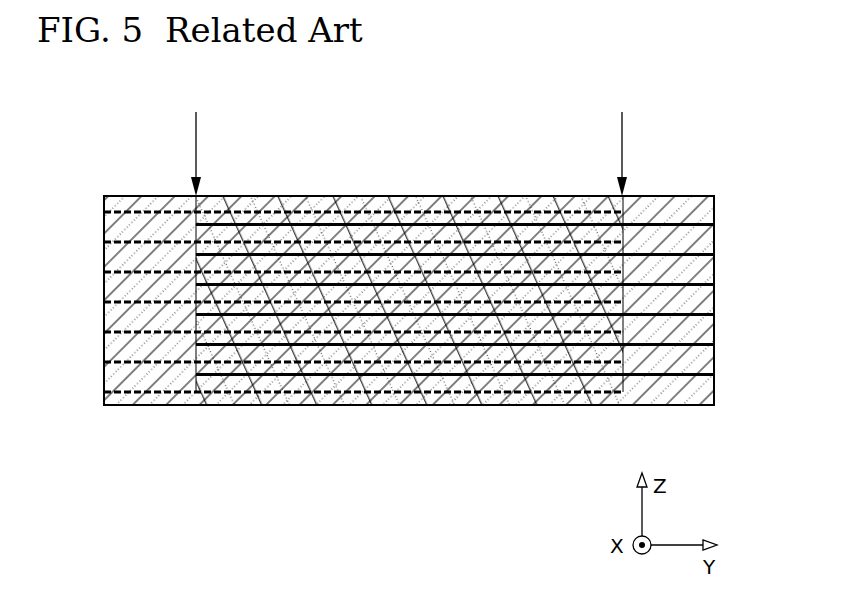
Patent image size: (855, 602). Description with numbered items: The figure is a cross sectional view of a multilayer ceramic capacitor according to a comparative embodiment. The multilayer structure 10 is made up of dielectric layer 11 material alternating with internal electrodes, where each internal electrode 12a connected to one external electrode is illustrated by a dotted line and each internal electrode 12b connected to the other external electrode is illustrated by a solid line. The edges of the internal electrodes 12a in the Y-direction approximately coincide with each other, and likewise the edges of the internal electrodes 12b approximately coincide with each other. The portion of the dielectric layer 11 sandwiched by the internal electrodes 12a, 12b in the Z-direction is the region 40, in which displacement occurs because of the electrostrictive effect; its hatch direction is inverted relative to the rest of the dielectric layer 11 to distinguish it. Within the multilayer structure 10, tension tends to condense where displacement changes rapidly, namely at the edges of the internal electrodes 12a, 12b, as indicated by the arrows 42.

The multilayer structure 10 is at (441, 273).
The dielectric layer 11 is at (703, 206).
The internal electrode 12a is at (297, 201).
The internal electrode 12b is at (458, 220).
The region 40 is at (375, 220).
The arrow 42 is at (197, 155).